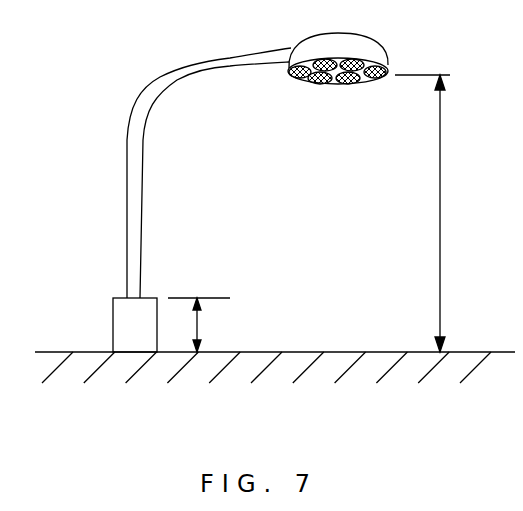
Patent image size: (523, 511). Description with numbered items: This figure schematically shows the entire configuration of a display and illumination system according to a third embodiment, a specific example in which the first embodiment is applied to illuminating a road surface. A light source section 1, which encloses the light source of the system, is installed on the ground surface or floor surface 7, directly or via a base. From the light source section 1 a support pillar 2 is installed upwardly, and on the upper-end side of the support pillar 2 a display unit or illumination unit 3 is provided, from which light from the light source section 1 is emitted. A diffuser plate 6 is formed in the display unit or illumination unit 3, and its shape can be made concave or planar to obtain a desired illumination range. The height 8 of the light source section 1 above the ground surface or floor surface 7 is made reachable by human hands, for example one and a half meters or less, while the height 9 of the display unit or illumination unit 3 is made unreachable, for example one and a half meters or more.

The light source section 1 is at (113, 320).
The support pillar 2 is at (155, 88).
The display unit or illumination unit 3 is at (363, 42).
The diffuser plate 6 is at (340, 87).
The ground surface or floor surface 7 is at (366, 372).
The height (h) of the light source section 8 is at (199, 325).
The height (H) of the display unit or illumination unit 9 is at (434, 213).